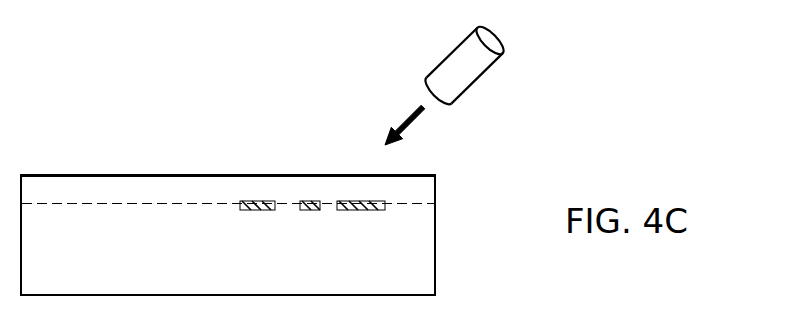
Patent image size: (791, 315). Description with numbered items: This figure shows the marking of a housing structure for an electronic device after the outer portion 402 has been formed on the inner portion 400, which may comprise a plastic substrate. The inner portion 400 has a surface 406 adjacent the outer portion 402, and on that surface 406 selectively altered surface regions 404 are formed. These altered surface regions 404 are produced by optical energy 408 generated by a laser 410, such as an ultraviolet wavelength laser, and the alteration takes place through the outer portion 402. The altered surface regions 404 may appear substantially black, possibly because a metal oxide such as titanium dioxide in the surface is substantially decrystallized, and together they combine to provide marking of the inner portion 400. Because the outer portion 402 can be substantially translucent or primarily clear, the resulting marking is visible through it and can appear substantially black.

The inner portion 400 is at (402, 286).
The outer portion 402 is at (412, 190).
The selectively altered surface regions 404 is at (250, 200).
The surface of the inner portion 406 is at (80, 203).
The optical energy 408 is at (410, 113).
The laser 410 is at (483, 78).